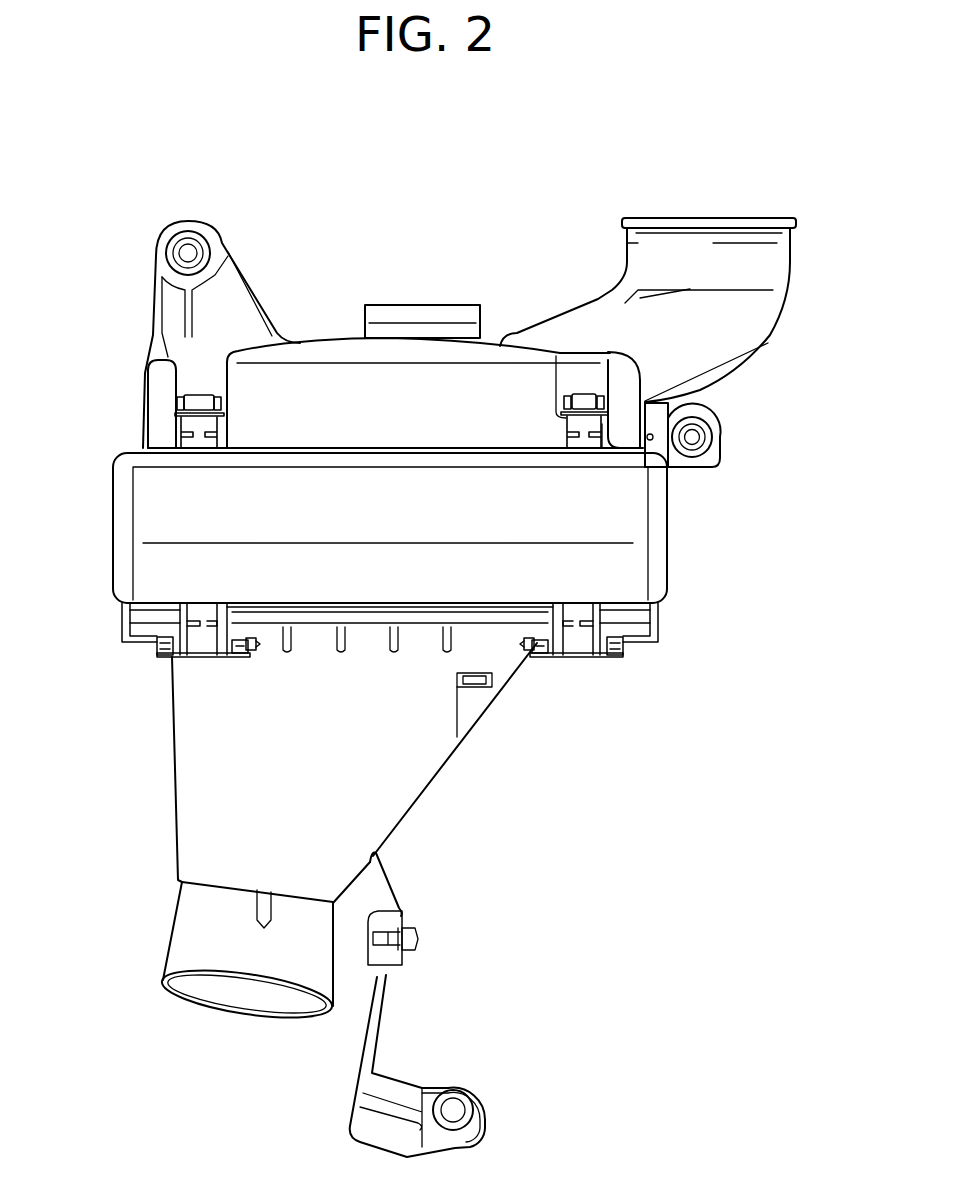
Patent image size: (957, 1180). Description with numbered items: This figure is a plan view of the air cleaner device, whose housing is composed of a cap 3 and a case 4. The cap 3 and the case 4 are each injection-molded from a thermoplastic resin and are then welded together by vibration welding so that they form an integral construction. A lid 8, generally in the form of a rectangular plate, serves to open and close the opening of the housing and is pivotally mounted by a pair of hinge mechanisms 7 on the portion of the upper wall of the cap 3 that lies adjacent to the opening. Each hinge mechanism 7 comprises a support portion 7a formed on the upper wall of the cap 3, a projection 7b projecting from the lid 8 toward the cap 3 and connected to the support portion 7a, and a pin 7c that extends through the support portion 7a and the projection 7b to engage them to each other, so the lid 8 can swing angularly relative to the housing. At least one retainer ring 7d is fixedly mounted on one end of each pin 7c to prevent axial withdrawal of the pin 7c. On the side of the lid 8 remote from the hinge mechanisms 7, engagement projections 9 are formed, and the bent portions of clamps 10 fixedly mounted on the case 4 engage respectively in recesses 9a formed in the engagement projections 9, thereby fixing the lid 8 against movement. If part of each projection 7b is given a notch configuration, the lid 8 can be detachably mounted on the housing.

The cap 3 is at (200, 826).
The case 4 is at (313, 383).
The hinge mechanism 7 is at (130, 640).
The support portion 7a is at (170, 660).
The projection 7b is at (200, 657).
The pin 7c is at (237, 657).
The retainer ring 7d is at (250, 645).
The lid 8 is at (603, 512).
The engagement projection 9 is at (193, 446).
The recess 9a is at (197, 424).
The clamp 10 is at (193, 404).